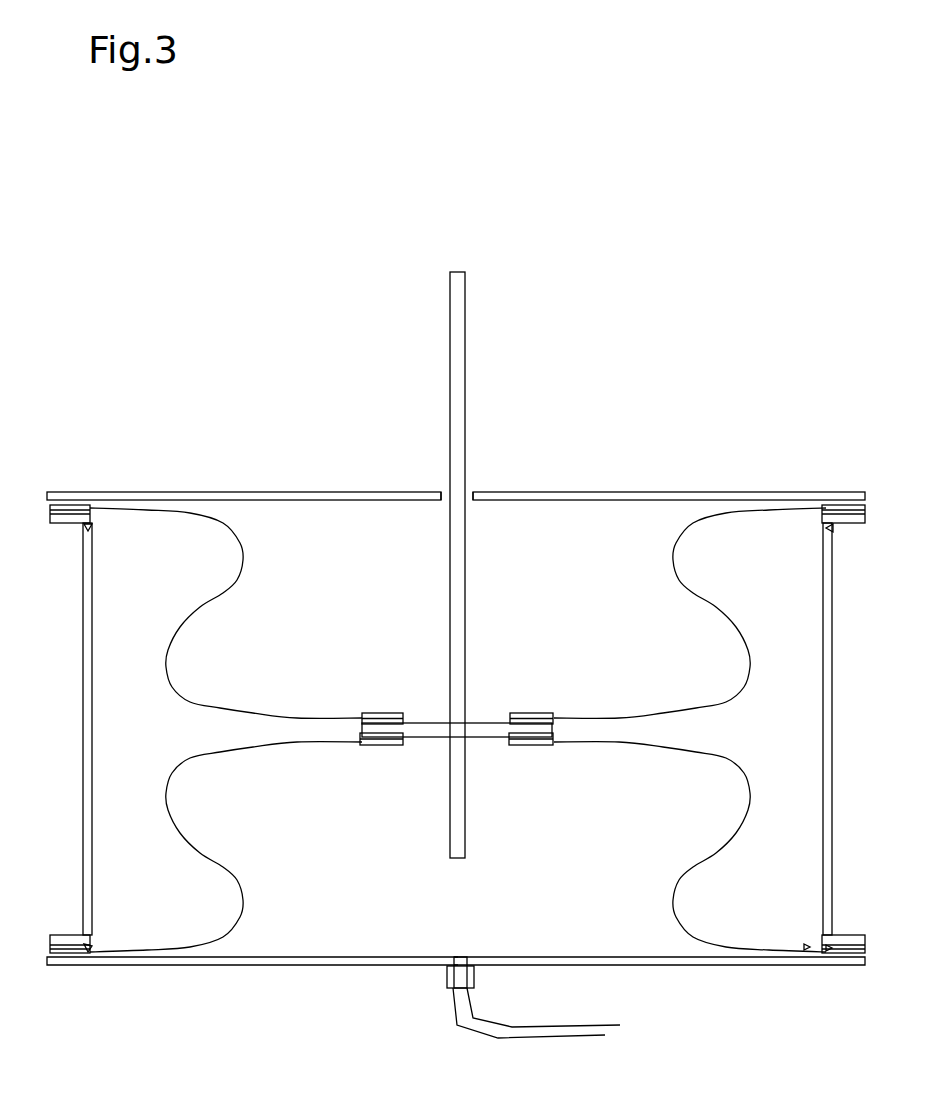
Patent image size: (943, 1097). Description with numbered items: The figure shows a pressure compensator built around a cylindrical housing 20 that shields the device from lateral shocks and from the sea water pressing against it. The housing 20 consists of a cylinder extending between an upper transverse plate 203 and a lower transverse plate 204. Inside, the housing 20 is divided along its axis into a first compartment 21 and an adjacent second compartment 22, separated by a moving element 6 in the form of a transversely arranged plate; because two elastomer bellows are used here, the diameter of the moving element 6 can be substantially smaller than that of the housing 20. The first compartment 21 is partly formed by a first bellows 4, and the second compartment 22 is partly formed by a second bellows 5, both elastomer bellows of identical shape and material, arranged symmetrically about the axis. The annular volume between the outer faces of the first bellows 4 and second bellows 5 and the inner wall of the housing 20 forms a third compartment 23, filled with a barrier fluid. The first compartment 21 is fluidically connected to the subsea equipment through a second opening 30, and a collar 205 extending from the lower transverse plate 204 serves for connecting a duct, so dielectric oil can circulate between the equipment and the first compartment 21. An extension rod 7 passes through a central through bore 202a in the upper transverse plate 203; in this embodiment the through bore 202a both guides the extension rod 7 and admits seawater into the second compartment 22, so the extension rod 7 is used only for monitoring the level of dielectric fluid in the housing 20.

The housing 20 is at (435, 727).
The first compartment 21 is at (341, 936).
The second compartment 22 is at (301, 507).
The third compartment 23 is at (105, 718).
The upper transverse plate 203 is at (642, 497).
The lower transverse plate 204 is at (673, 962).
The central through bore 202a is at (479, 476).
The collar 205 is at (447, 973).
The second opening 30 is at (472, 947).
The extension rod 7 is at (459, 368).
The moving element 6 is at (493, 738).
The second bellows 5 is at (217, 708).
The first bellows 4 is at (203, 848).